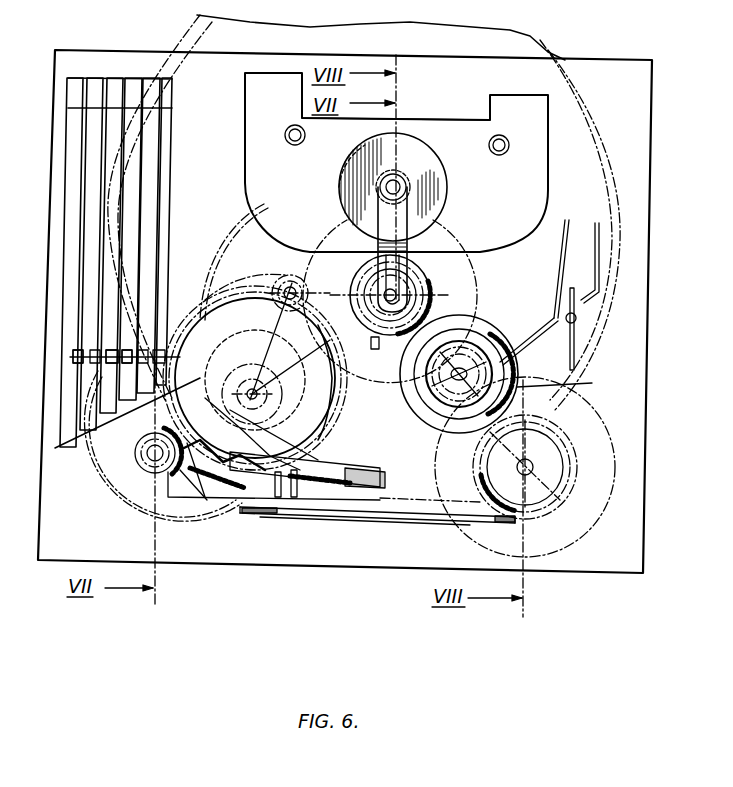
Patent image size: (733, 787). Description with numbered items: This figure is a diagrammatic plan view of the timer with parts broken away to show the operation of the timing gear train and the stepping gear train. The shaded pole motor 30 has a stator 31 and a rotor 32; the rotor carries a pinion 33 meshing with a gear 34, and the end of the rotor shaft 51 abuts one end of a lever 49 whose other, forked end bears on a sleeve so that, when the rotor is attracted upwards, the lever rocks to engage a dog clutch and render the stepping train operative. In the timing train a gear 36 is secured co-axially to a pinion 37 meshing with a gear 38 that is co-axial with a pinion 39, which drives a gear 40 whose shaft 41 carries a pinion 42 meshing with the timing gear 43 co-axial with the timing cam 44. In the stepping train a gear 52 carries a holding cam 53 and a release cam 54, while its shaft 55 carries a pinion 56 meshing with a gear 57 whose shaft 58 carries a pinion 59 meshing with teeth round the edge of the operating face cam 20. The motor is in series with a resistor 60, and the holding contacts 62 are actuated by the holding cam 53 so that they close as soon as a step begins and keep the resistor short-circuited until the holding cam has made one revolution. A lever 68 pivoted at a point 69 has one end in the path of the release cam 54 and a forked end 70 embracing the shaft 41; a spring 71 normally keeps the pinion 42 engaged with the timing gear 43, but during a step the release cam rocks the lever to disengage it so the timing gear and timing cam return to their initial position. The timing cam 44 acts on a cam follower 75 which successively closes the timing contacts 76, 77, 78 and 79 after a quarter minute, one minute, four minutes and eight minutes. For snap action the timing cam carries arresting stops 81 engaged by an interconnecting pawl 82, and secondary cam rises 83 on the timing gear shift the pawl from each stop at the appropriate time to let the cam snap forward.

The operating face cam 20 is at (438, 506).
The shaded pole motor 30 is at (423, 121).
The stator 31 is at (538, 168).
The rotor 32 is at (425, 165).
The pinion 33 is at (408, 184).
The gear 34 is at (468, 246).
The gear 36 is at (240, 223).
The pinion 37 is at (285, 280).
The gear 38 is at (203, 298).
The pinion 39 is at (258, 390).
The gear 40 is at (190, 545).
The shaft 41 is at (148, 456).
The pinion 42 is at (150, 470).
The timing gear 43 is at (150, 430).
The timing cam 44 is at (222, 303).
The lever 49 is at (402, 231).
The rotor shaft 51 is at (340, 185).
The gear 52 is at (420, 300).
The holding cam 53 is at (337, 487).
The release cam 54 is at (503, 346).
The shaft 55 is at (492, 338).
The pinion 56 is at (414, 430).
The gear 57 is at (612, 423).
The shaft 58 is at (533, 467).
The pinion 59 is at (560, 497).
The resistor 60 is at (360, 497).
The holding contacts 62 is at (576, 318).
The lever 68 is at (386, 413).
The pivot point 69 is at (297, 498).
The forked end 70 is at (160, 482).
The spring 71 is at (347, 382).
The cam follower 75 is at (200, 373).
The timing contact 76 is at (150, 355).
The timing contact 77 is at (128, 355).
The timing contact 78 is at (110, 356).
The timing contact 79 is at (82, 358).
The arresting stops 81 is at (210, 476).
The interconnecting pawl 82 is at (280, 498).
The secondary cam rises 83 is at (185, 478).